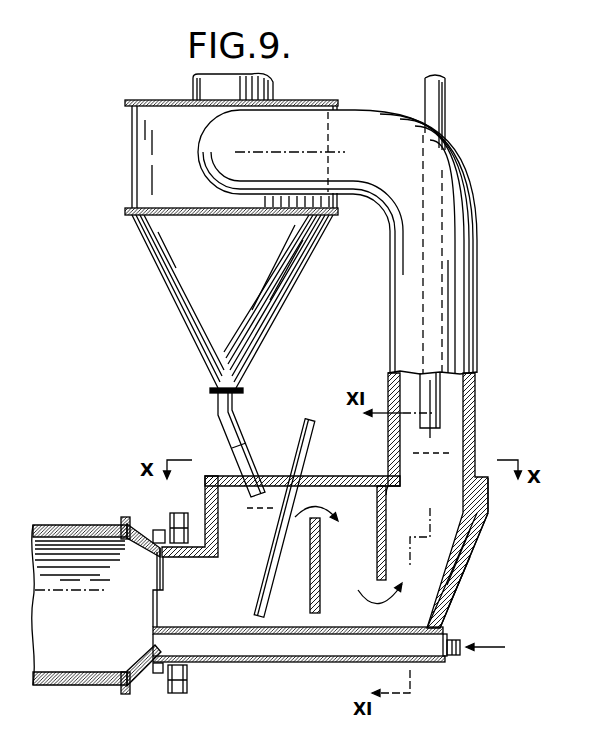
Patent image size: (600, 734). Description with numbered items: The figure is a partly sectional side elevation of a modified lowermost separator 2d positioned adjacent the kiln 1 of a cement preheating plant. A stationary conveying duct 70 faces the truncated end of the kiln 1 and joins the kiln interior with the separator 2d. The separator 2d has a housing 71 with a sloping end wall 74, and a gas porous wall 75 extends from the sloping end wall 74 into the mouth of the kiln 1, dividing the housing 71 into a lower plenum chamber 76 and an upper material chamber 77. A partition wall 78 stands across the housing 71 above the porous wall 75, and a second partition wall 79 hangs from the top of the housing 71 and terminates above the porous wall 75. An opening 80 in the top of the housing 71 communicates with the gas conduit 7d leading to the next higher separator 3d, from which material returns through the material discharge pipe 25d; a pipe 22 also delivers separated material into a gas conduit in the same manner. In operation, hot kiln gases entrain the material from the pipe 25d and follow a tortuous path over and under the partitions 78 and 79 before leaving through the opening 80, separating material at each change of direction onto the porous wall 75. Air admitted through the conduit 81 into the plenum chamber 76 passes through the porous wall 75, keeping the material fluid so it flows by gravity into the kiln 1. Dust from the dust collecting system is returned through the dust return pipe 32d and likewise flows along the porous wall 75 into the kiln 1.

The kiln 1 is at (82, 526).
The lowermost separator 2d is at (474, 568).
The next higher separator 3d is at (163, 282).
The gas conduit 7d is at (478, 306).
The pipe 22 is at (442, 130).
The material discharge pipe 25d is at (215, 420).
The dust return pipe 32d is at (304, 433).
The stationary conveying duct 70 is at (250, 661).
The housing 71 is at (204, 497).
The sloping end wall 74 is at (450, 607).
The gas porous wall 75 is at (280, 635).
The plenum chamber 76 is at (300, 650).
The material chamber 77 is at (437, 588).
The partition wall 78 is at (320, 615).
The second partition wall 79 is at (356, 481).
The opening 80 is at (423, 477).
The conduit 81 is at (457, 655).